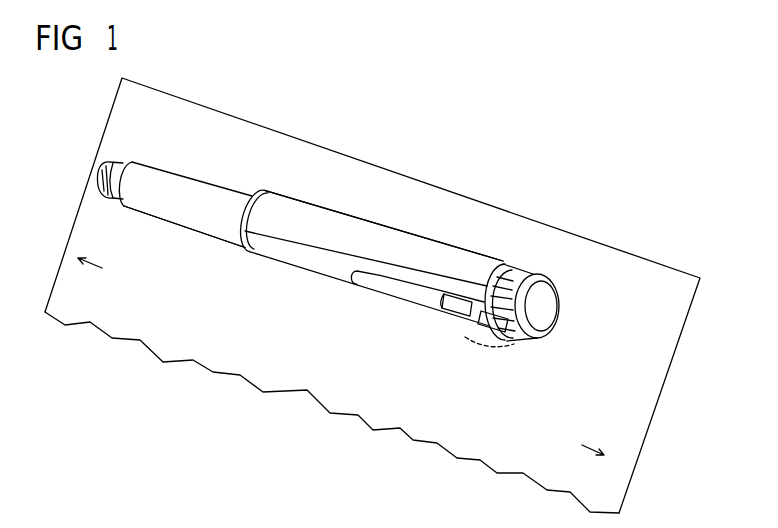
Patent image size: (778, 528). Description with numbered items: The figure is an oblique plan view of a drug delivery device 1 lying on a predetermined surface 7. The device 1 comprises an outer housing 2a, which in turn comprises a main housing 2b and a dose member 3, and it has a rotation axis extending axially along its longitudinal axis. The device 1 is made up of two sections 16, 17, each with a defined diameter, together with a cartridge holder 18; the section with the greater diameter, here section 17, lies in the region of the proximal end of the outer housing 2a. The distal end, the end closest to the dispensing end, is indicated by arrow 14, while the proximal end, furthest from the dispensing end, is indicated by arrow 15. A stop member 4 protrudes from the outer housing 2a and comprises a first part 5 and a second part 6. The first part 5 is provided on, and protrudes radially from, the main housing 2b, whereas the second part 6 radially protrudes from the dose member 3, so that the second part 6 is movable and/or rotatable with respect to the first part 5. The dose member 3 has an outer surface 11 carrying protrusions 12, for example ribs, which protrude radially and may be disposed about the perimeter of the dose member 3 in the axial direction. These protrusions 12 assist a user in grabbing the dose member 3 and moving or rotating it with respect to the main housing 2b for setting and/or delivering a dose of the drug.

The drug delivery device 1 is at (433, 226).
The outer housing 2a is at (415, 372).
The main housing 2b is at (387, 300).
The dose member 3 is at (554, 312).
The stop member 4 is at (481, 348).
The first part 5 is at (478, 329).
The second part 6 is at (500, 332).
The surface 7 is at (251, 383).
The outer surface 11 is at (528, 270).
The protrusions 12 is at (513, 265).
The arrow 14 is at (87, 276).
The arrow 15 is at (588, 460).
The section 16 is at (177, 224).
The section 17 is at (312, 271).
The cartridge holder 18 is at (181, 195).